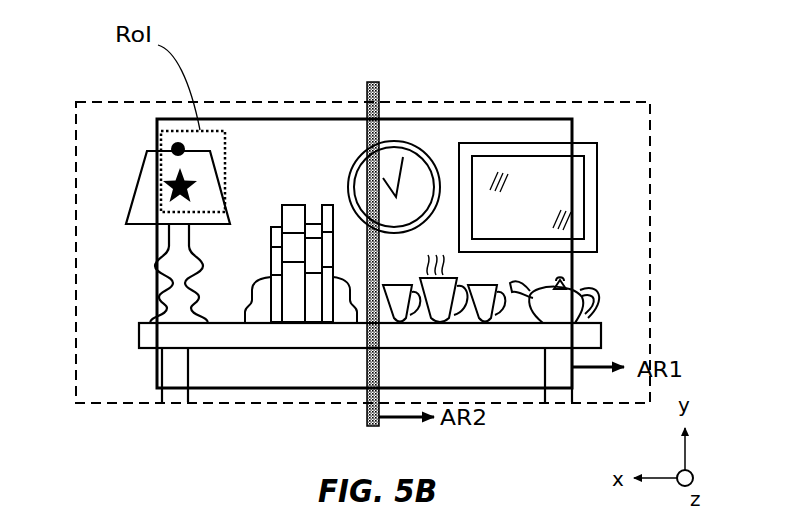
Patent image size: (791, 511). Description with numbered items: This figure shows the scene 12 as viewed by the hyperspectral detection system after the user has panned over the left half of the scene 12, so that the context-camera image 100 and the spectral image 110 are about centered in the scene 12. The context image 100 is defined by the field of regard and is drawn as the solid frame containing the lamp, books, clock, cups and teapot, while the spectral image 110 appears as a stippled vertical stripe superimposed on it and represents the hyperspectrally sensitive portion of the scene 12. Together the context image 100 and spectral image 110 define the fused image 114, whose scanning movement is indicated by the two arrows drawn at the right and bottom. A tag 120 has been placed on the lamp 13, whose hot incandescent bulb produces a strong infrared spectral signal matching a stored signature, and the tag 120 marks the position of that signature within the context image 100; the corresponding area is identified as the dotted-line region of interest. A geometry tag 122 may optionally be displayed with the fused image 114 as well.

The scene 12 is at (602, 102).
The lamp 13 is at (218, 169).
The context-camera image 100 is at (293, 119).
The spectral image 110 is at (375, 81).
The fused image 114 is at (312, 83).
The tag 120 is at (172, 182).
The geometry tag 122 is at (178, 143).